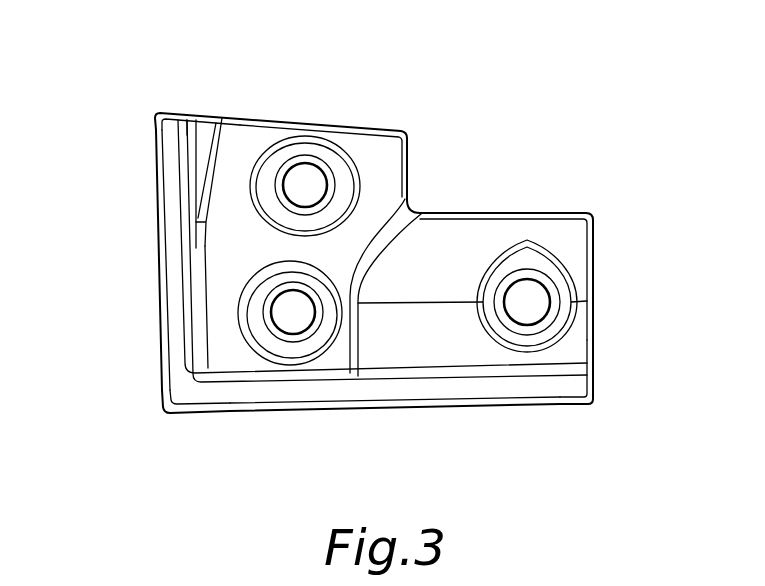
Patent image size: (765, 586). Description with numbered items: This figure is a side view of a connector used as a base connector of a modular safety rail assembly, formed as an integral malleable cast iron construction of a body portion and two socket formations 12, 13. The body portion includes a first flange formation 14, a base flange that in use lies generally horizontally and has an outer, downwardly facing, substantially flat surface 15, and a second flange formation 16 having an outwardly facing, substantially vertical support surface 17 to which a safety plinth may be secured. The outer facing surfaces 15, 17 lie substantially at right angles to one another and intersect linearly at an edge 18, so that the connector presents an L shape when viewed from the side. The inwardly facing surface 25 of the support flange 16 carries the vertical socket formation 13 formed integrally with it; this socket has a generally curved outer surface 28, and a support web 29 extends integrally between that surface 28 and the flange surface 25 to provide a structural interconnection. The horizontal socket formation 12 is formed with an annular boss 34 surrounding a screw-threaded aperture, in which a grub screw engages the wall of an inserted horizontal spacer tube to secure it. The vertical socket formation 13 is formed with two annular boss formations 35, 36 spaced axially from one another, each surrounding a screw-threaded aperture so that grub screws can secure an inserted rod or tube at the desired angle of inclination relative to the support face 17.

The socket formation 12 is at (537, 231).
The socket formation 13 is at (384, 163).
The first flange formation 14 is at (529, 388).
The outer surface 15 is at (428, 405).
The second flange formation 16 is at (175, 332).
The support surface 17 is at (157, 183).
The edge 18 is at (164, 414).
The inwardly facing surface 25 is at (198, 126).
The curved outer surface 28 is at (231, 240).
The support web 29 is at (208, 143).
The annular boss 34 is at (560, 293).
The annular boss formation 35 is at (312, 147).
The annular boss formation 36 is at (290, 338).